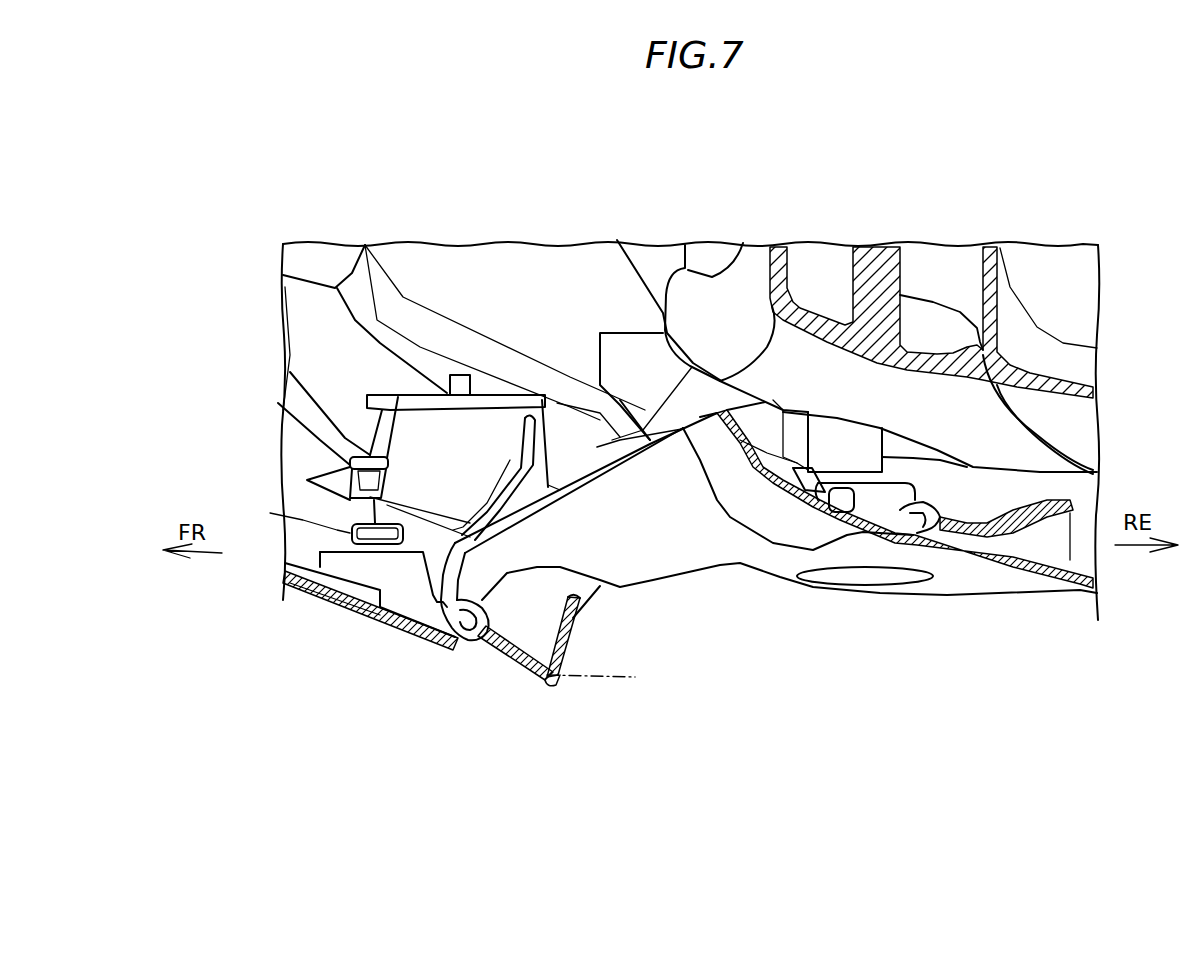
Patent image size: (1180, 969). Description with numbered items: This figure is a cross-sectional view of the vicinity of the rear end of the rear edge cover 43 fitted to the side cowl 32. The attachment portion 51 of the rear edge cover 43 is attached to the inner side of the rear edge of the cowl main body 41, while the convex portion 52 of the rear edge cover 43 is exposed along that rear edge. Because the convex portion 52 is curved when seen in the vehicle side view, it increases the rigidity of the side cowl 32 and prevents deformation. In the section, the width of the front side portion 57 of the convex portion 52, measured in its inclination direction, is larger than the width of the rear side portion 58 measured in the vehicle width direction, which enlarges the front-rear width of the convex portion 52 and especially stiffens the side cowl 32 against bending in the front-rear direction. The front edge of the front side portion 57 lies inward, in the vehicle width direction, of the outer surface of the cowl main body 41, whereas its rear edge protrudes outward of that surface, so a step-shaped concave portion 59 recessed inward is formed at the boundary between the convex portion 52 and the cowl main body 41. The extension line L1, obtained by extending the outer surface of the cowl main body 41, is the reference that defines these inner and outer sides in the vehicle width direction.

The side cowl 32 is at (413, 670).
The cowl main body 41 is at (333, 597).
The rear edge cover 43 is at (530, 710).
The attachment portion 51 is at (400, 592).
The convex portion 52 is at (555, 673).
The front side portion 57 is at (500, 657).
The rear side portion 58 is at (573, 643).
The step-shaped concave portion 59 is at (477, 637).
The extension line L1 is at (603, 677).